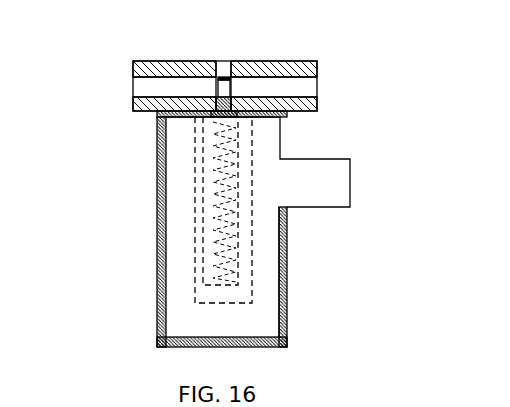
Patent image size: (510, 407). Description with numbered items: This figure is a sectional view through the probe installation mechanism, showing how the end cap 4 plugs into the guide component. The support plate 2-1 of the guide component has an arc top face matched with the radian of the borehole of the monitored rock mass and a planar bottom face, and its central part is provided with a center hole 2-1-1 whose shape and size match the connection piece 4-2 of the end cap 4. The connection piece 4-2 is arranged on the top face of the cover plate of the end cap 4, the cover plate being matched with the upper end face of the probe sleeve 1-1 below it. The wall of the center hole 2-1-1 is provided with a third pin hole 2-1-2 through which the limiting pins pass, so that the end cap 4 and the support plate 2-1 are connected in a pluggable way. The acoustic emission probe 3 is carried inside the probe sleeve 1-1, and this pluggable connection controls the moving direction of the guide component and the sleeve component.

The probe sleeve 1-1 is at (160, 280).
The acoustic emission probe 3 is at (179, 230).
The support plate 2-1 is at (145, 68).
The center hole 2-1-1 is at (290, 23).
The third pin hole 2-1-2 is at (280, 82).
The end cap 4 is at (220, 100).
The connection piece 4-2 is at (224, 87).